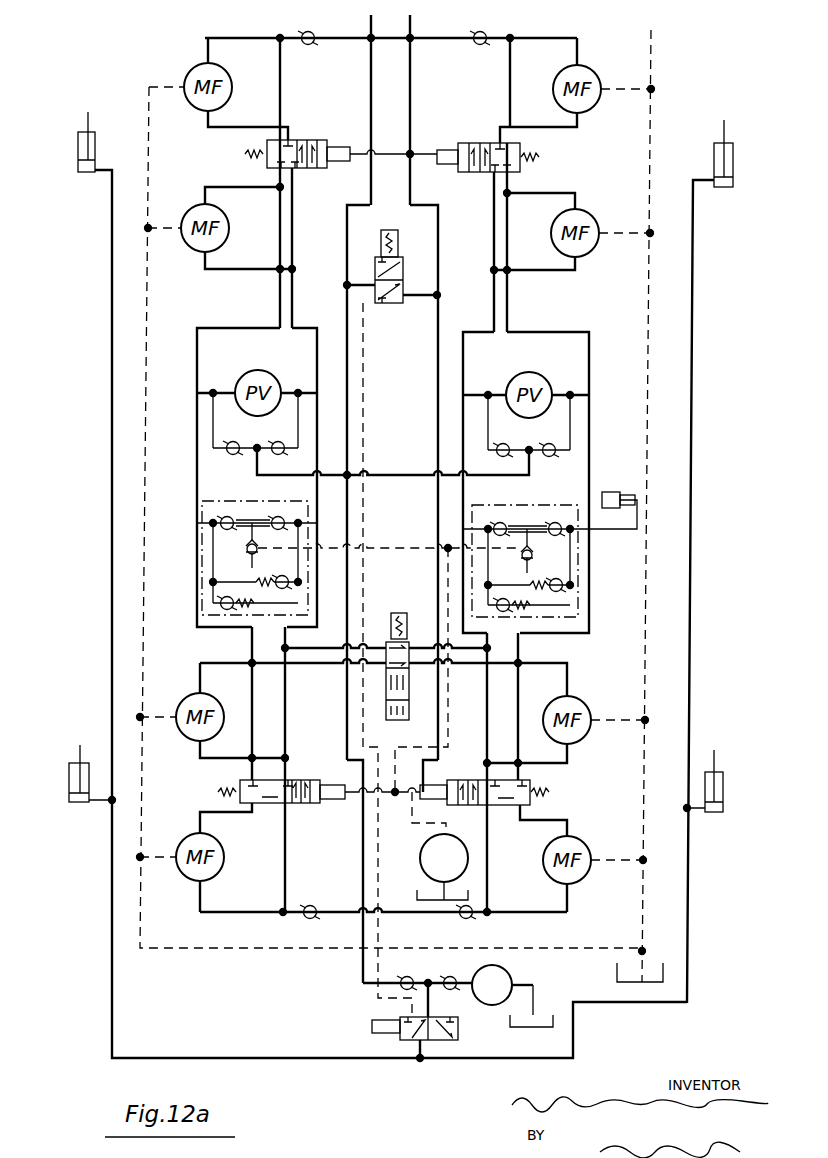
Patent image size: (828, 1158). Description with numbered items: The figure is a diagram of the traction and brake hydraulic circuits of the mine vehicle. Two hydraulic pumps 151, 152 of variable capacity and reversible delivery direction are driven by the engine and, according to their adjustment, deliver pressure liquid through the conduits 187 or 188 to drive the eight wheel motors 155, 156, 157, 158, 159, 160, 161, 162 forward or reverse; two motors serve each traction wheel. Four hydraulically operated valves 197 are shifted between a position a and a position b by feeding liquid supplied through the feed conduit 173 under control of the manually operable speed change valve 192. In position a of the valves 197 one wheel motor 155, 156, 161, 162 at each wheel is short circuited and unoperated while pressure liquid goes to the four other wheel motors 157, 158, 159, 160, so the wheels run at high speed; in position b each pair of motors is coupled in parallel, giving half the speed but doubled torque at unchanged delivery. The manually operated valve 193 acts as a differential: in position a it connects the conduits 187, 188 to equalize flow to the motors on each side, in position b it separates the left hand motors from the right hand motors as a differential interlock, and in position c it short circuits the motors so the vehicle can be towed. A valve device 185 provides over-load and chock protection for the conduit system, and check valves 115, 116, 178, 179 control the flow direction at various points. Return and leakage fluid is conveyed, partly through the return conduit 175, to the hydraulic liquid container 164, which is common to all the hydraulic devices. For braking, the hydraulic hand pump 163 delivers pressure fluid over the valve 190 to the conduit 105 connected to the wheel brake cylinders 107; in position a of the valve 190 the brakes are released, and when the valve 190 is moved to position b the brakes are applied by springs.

The conduit 105 is at (688, 910).
The wheel brake cylinders 107 is at (718, 832).
The check valve 115 is at (538, 950).
The check valve 116 is at (436, 963).
The hydraulic pump 151 is at (545, 380).
The hydraulic pump 152 is at (275, 378).
The wheel motor 155 is at (584, 878).
The wheel motor 156 is at (183, 876).
The wheel motor 157 is at (585, 702).
The wheel motor 158 is at (184, 706).
The wheel motor 159 is at (556, 212).
The wheel motor 160 is at (223, 212).
The wheel motor 161 is at (594, 73).
The wheel motor 162 is at (224, 69).
The hydraulic hand pump 163 is at (510, 973).
The hydraulic liquid container 164 is at (663, 953).
The feed conduit 173 is at (380, 68).
The return conduit 175 is at (366, 521).
The check valve 178 is at (510, 447).
The check valve 179 is at (566, 466).
The valve device 185 is at (520, 498).
The conduit 187 is at (483, 254).
The conduit 188 is at (540, 318).
The valve 190 is at (452, 1040).
The speed change valve 192 is at (414, 285).
The differential valve 193 is at (420, 720).
The hydraulically operated valve 197 is at (475, 805).